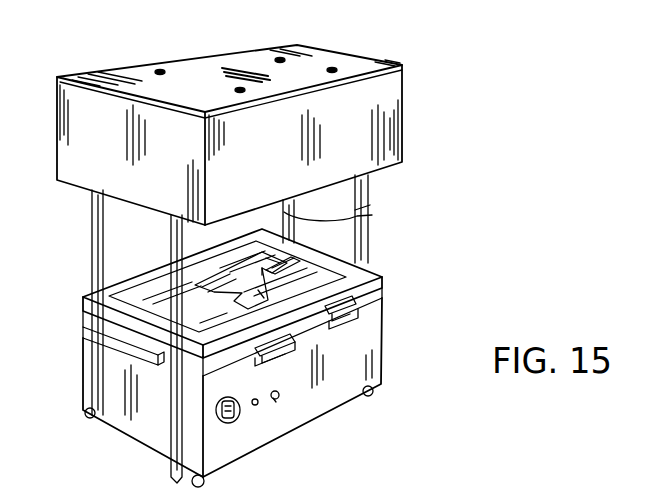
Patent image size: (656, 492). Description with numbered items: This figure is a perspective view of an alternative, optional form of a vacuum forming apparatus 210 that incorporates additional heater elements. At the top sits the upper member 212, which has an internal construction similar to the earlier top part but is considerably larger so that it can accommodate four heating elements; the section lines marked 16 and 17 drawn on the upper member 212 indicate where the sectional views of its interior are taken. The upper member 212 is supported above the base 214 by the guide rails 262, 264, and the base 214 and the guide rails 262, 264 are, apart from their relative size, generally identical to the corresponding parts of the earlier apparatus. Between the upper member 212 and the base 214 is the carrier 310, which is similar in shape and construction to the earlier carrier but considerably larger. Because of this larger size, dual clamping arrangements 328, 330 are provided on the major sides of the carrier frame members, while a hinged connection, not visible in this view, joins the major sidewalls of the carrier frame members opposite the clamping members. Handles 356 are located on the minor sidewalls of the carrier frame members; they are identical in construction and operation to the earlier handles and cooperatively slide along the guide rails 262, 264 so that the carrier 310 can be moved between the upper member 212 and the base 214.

The vacuum forming apparatus 210 is at (106, 58).
The upper member 212 is at (420, 140).
The base 214 is at (405, 308).
The section line 16 is at (371, 51).
The section line 17 is at (206, 45).
The guide rail 262 is at (372, 220).
The guide rail 264 is at (168, 256).
The carrier 310 is at (392, 260).
The clamping arrangement 328 is at (362, 332).
The clamping arrangement 330 is at (352, 316).
The handle 356 is at (113, 358).